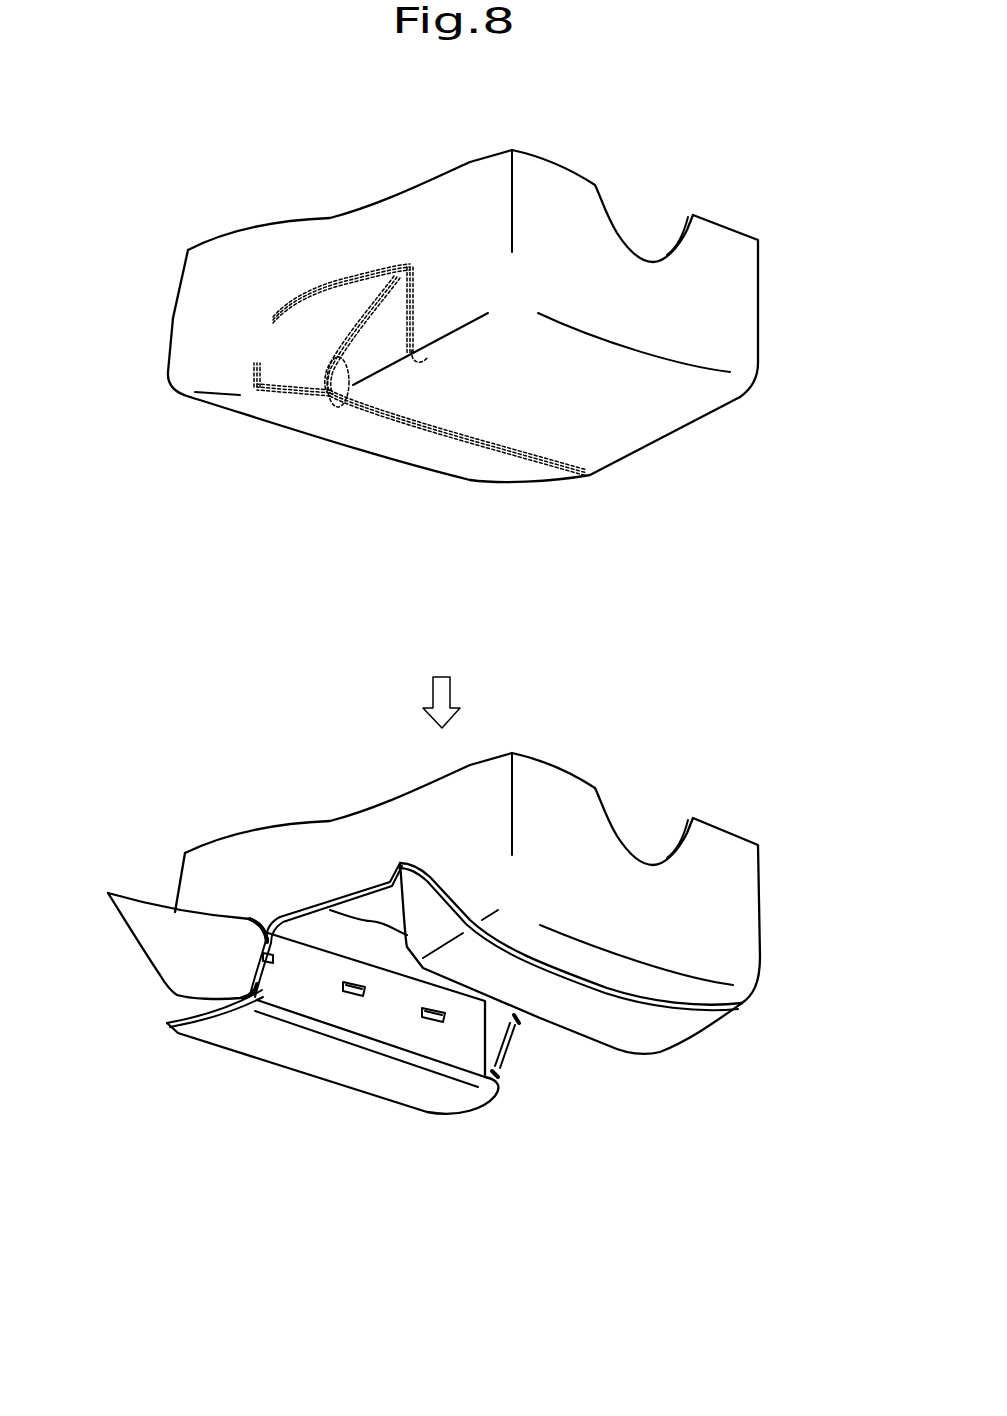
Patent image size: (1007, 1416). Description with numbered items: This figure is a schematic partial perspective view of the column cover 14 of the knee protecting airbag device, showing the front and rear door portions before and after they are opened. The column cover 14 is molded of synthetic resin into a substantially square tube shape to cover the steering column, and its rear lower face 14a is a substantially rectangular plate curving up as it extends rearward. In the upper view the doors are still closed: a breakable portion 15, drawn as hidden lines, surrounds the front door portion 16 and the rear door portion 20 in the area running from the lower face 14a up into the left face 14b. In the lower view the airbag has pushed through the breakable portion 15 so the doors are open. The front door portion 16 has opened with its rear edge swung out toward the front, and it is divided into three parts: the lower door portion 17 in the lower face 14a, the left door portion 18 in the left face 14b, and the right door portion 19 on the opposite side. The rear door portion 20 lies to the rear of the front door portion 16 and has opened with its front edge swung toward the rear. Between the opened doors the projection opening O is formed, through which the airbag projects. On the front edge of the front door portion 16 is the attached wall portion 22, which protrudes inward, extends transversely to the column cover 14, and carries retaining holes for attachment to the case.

The column cover 14 is at (574, 166).
The lower face 14a is at (587, 452).
The left face 14b is at (260, 332).
The breakable portion 15 is at (338, 408).
The front door portion 16 is at (458, 486).
The lower door portion 17 is at (398, 463).
The left door portion 18 is at (320, 307).
The right door portion 19 is at (512, 1054).
The rear door portion 20 is at (398, 380).
The attached wall portion 22 is at (298, 960).
The projection opening O is at (427, 1050).